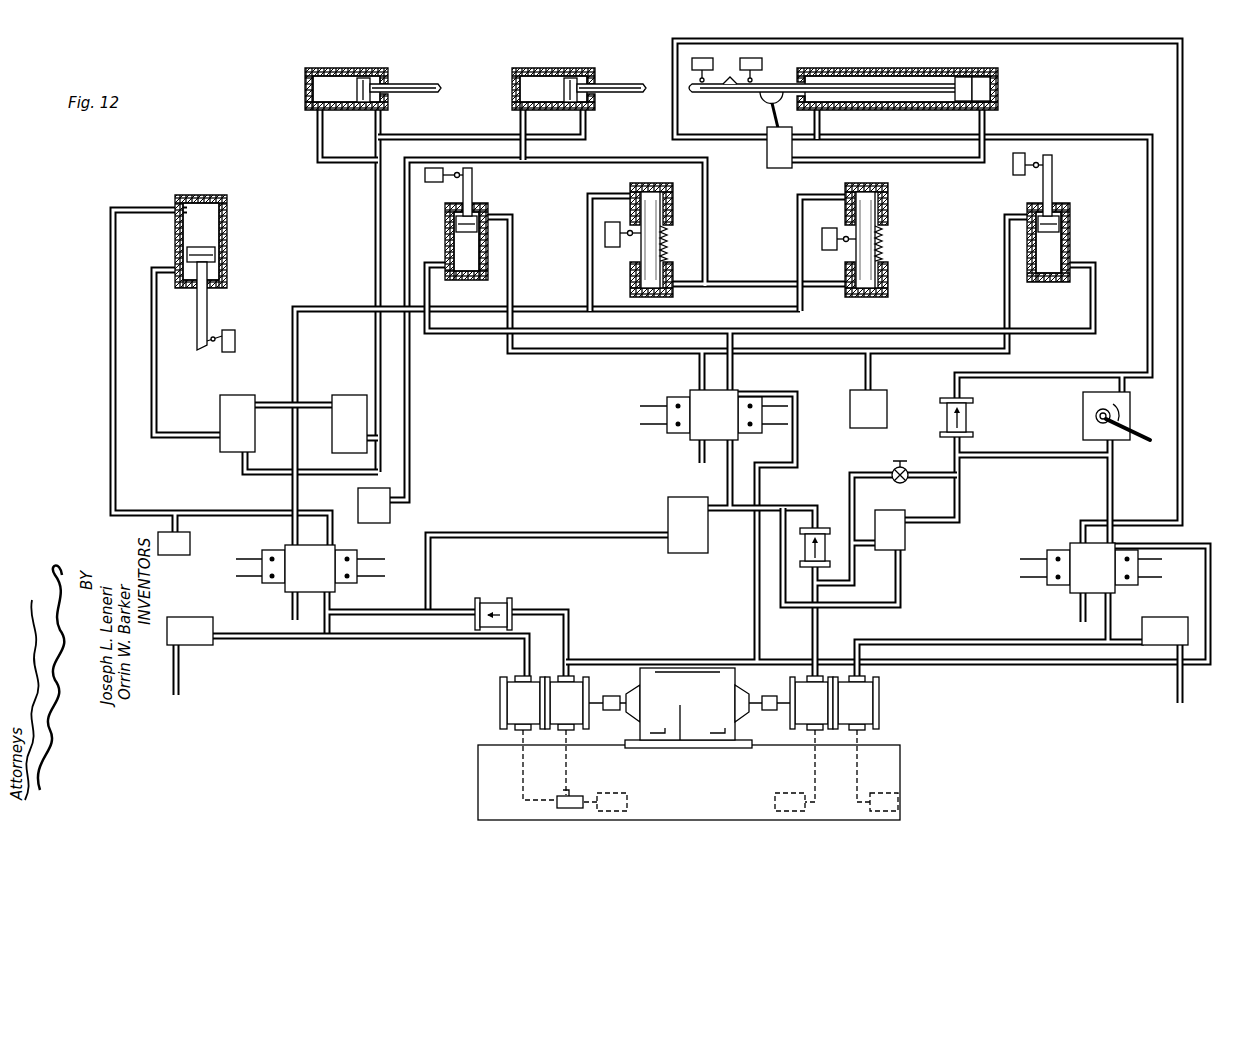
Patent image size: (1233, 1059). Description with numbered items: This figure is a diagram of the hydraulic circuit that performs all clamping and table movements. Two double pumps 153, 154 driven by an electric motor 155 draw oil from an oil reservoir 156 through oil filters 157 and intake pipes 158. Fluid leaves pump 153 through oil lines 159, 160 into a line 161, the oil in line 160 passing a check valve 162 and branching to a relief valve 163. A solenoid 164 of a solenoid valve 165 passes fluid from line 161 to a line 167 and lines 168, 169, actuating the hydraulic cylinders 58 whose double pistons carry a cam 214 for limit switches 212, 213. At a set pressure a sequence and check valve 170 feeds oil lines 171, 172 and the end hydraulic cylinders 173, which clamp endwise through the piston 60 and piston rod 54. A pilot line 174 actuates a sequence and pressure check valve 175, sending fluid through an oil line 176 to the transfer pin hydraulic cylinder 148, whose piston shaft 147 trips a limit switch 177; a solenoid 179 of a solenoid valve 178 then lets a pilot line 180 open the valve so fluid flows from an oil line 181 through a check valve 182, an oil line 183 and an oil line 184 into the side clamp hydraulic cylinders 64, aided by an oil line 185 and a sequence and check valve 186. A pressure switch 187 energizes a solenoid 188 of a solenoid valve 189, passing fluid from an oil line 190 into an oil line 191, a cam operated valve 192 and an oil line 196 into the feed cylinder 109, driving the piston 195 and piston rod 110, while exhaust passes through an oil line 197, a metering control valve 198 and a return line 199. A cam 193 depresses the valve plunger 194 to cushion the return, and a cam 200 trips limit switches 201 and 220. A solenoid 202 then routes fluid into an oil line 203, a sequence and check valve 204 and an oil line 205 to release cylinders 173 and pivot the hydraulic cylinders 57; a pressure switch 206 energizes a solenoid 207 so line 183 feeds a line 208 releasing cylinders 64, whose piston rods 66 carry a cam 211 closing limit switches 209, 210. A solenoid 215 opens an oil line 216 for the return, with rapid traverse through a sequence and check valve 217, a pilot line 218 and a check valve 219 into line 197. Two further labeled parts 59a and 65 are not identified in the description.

The piston rod 54 is at (405, 88).
The hydraulic cylinder 57 is at (677, 195).
The hydraulic cylinder 58 is at (640, 186).
The spring 59a is at (665, 246).
The piston 60 is at (371, 110).
The side clamp hydraulic cylinder 64 is at (444, 229).
The piston 65 is at (461, 233).
The piston rod 66 is at (473, 196).
The feed hydraulic cylinder 109 is at (925, 67).
The piston rod 110 is at (842, 84).
The piston shaft 147 is at (204, 320).
The transfer pin hydraulic cylinder 148 is at (228, 228).
The double pump 153 is at (522, 703).
The double pump 154 is at (862, 698).
The electric motor 155 is at (698, 687).
The oil reservoir 156 is at (482, 763).
The oil filter 157 is at (620, 800).
The intake pipe 158 is at (530, 790).
The oil line 159 is at (400, 638).
The oil line 160 is at (571, 628).
The line 161 is at (330, 602).
The check valve 162 is at (516, 600).
The relief valve 163 is at (184, 627).
The solenoid 164 is at (280, 586).
The solenoid valve 165 is at (283, 546).
The line 167 is at (556, 308).
The line 168 is at (585, 272).
The line 169 is at (796, 248).
The sequence and check valve 170 is at (336, 405).
The oil line 171 is at (376, 348).
The oil line 172 is at (434, 133).
The end hydraulic cylinder 173 is at (343, 66).
The pilot line 174 is at (314, 474).
The sequence and pressure check valve 175 is at (233, 409).
The oil line 176 is at (156, 360).
The limit switch 177 is at (237, 338).
The solenoid valve 178 is at (688, 393).
The solenoid 179 is at (678, 434).
The pilot line 180 is at (660, 660).
The oil line 181 is at (851, 558).
The check valve 182 is at (822, 520).
The oil line 183 is at (728, 476).
The oil line 184 is at (513, 240).
The oil line 185 is at (524, 532).
The sequence and check valve 186 is at (684, 510).
The pressure switch 187 is at (873, 416).
The solenoid 188 is at (1066, 583).
The solenoid valve 189 is at (1067, 542).
The oil line 190 is at (918, 637).
The oil line 191 is at (1030, 45).
The cam operated valve 192 is at (767, 151).
The cam 193 is at (769, 102).
The valve plunger 194 is at (822, 122).
The piston 195 is at (991, 88).
The oil line 196 is at (880, 159).
The oil line 197 is at (914, 137).
The metering control valve 198 is at (1083, 403).
The return line 199 is at (299, 617).
The cam 200 is at (731, 85).
The limit switch 201 is at (706, 56).
The solenoid 202 is at (344, 559).
The oil line 203 is at (111, 345).
The sequence and check valve 204 is at (392, 510).
The oil line 205 is at (455, 160).
The pressure switch 206 is at (157, 540).
The solenoid 207 is at (745, 428).
The line 208 is at (457, 334).
The limit switch 209 is at (432, 183).
The limit switch 210 is at (1012, 168).
The cam 211 is at (470, 176).
The limit switch 212 is at (604, 233).
The limit switch 213 is at (832, 227).
The cam 214 is at (637, 237).
The solenoid 215 is at (1128, 584).
The oil line 216 is at (1020, 452).
The sequence and check valve 217 is at (898, 536).
The pilot line 218 is at (903, 601).
The check valve 219 is at (975, 406).
The limit switch 220 is at (763, 63).